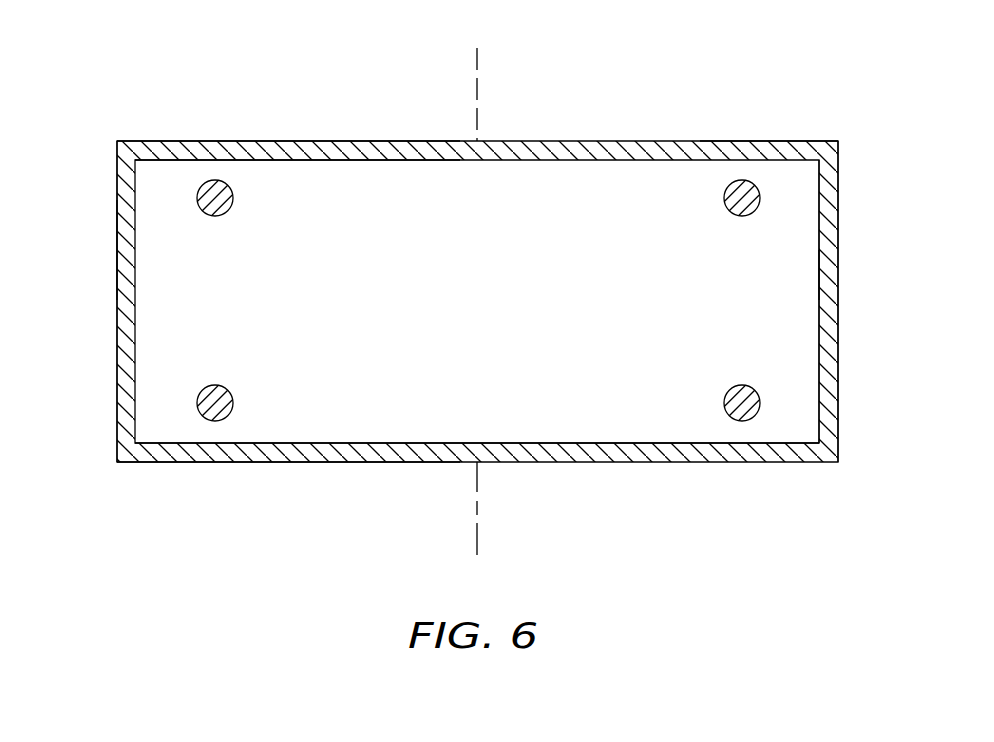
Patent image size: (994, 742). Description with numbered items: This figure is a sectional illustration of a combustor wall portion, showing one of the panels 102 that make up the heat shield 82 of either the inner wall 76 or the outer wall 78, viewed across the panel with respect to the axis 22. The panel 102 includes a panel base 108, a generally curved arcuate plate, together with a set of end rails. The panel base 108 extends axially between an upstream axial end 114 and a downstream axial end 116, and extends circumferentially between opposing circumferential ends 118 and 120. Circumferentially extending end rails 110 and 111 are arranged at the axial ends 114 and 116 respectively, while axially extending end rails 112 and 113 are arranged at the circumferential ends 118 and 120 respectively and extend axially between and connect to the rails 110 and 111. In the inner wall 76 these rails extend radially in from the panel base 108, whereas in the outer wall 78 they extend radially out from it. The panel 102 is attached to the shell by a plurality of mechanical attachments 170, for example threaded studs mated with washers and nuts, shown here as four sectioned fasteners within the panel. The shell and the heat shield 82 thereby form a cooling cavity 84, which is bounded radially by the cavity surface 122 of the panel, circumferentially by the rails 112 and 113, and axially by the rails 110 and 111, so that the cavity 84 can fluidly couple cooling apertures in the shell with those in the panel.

The central axis 22 is at (477, 62).
The inner wall 76 is at (477, 234).
The outer wall 78 is at (622, 98).
The heat shield 82 is at (782, 85).
The panel 102 is at (767, 108).
The cooling cavity 84 is at (443, 345).
The panel base 108 is at (330, 420).
The circumferentially extending end rail 110 is at (336, 148).
The circumferentially extending end rail 111 is at (280, 458).
The axially extending end rail 112 is at (126, 203).
The axially extending end rail 113 is at (828, 190).
The upstream axial end 114 is at (268, 141).
The downstream axial end 116 is at (236, 463).
The circumferential end 118 is at (117, 244).
The circumferential end 120 is at (838, 225).
The cavity surface 122 is at (790, 330).
The mechanical attachment 170 is at (222, 222).